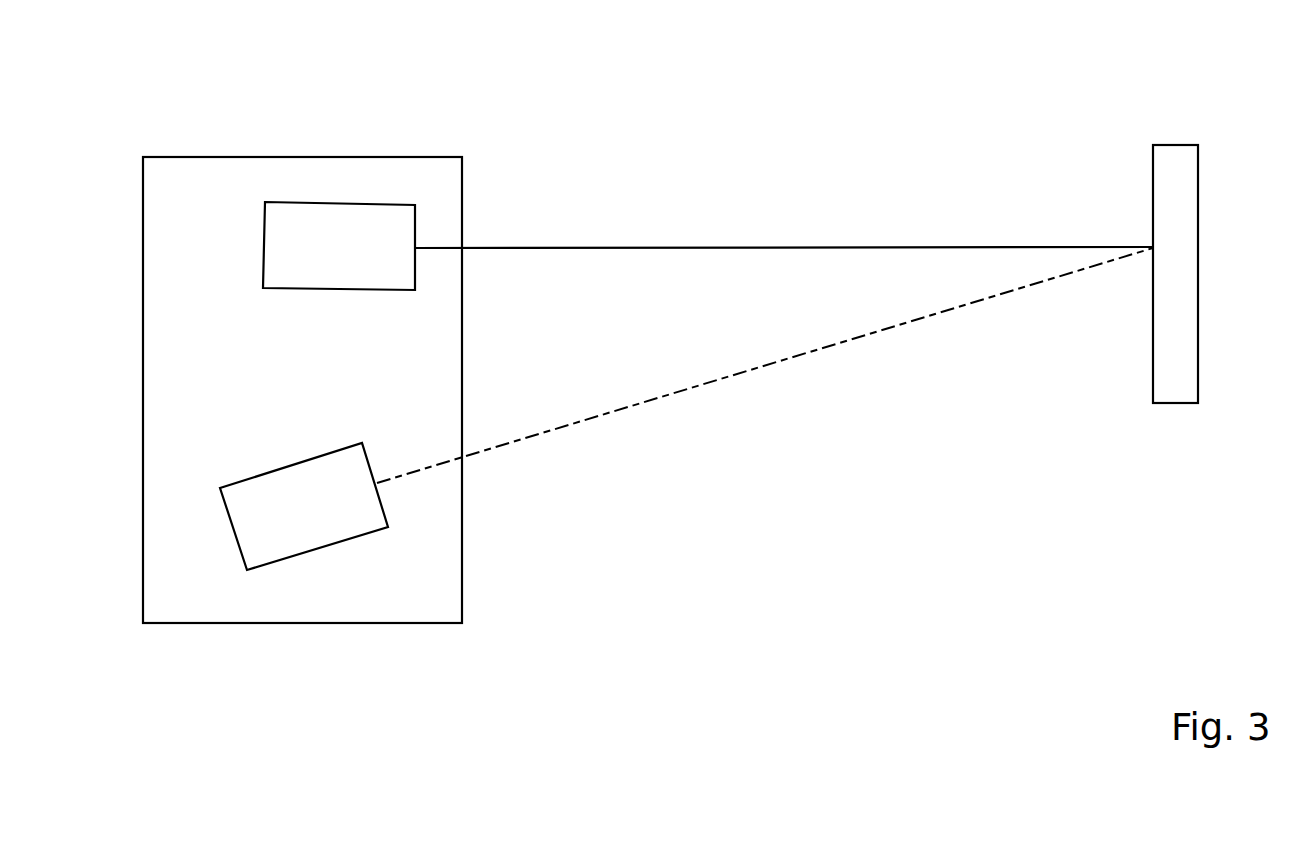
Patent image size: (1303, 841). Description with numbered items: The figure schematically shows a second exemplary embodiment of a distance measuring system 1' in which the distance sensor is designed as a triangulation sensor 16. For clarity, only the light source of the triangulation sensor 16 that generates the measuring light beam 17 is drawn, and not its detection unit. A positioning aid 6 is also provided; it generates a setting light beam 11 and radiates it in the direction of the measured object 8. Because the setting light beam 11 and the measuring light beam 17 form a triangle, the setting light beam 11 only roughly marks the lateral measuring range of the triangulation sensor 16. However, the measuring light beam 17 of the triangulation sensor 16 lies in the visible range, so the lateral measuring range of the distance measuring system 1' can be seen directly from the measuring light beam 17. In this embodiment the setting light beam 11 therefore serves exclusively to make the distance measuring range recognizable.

The distance measuring system 1' is at (430, 320).
The positioning aid 6 is at (346, 262).
The triangulation sensor 16 is at (322, 526).
The measured object 8 is at (1187, 169).
The setting light beam 11 is at (747, 247).
The measuring light beam 17 is at (727, 380).